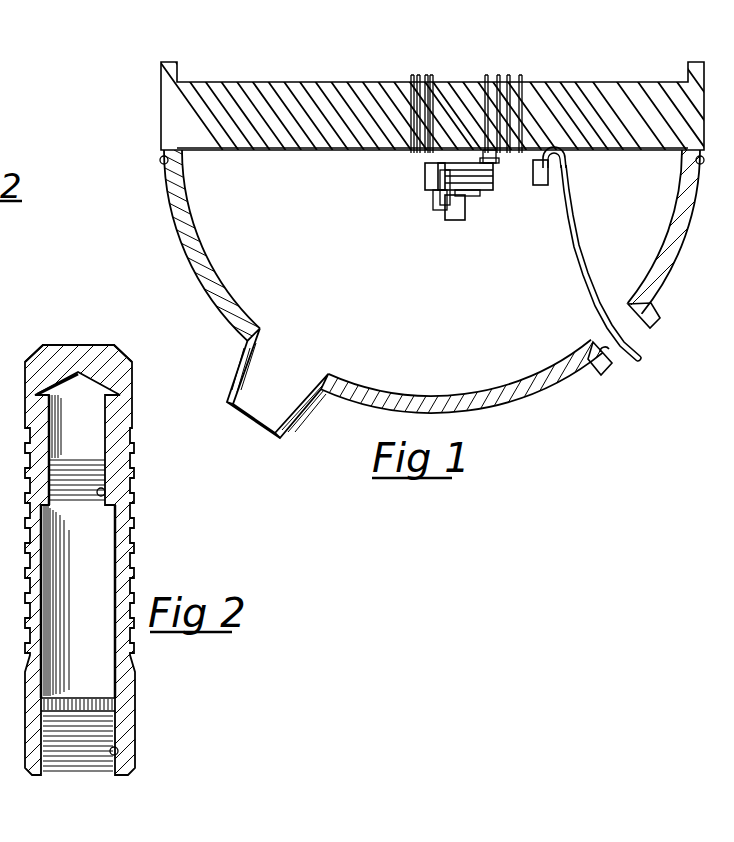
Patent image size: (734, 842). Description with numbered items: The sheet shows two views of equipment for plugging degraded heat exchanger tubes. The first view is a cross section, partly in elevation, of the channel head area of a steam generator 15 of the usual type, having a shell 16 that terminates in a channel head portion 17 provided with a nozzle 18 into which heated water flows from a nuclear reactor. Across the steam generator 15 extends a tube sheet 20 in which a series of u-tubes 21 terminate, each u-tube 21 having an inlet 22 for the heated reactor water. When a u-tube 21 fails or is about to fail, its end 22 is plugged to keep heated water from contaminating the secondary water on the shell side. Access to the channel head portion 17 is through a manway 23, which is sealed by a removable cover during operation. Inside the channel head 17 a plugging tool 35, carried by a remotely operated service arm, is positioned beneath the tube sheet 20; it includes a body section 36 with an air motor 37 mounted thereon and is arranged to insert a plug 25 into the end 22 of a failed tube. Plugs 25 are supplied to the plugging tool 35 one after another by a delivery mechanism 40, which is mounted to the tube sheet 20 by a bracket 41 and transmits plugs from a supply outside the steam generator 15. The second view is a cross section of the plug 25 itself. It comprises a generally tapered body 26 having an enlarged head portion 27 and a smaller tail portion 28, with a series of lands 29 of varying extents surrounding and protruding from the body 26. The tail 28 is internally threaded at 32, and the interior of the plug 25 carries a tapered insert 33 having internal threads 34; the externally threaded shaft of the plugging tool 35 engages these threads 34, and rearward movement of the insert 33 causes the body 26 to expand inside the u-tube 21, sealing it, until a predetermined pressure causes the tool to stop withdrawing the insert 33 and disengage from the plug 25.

In FIG. 1, the steam generator 15 is at (166, 214).
In FIG. 1, the shell 16 is at (692, 230).
In FIG. 1, the channel head portion 17 is at (300, 226).
In FIG. 1, the nozzle 18 is at (284, 434).
In FIG. 1, the tube sheet 20 is at (313, 80).
In FIG. 1, the u-tubes 21 is at (520, 80).
In FIG. 1, the inlet 22 is at (493, 152).
In FIG. 1, the manway 23 is at (616, 363).
In FIG. 1, the plugging tool 35 is at (423, 174).
In FIG. 1, the body section 36 is at (484, 188).
In FIG. 1, the air motor 37 is at (458, 222).
In FIG. 1, the delivery mechanism 40 is at (563, 195).
In FIG. 1, the bracket 41 is at (566, 155).
In FIG. 2, the plug 25 is at (142, 422).
In FIG. 2, the tapered body 26 is at (134, 378).
In FIG. 2, the enlarged head portion 27 is at (100, 344).
In FIG. 2, the tail portion 28 is at (136, 722).
In FIG. 2, the lands 29 is at (136, 530).
In FIG. 2, the internal threads 32 is at (118, 752).
In FIG. 2, the insert 33 is at (108, 470).
In FIG. 2, the internal threads 34 is at (105, 493).